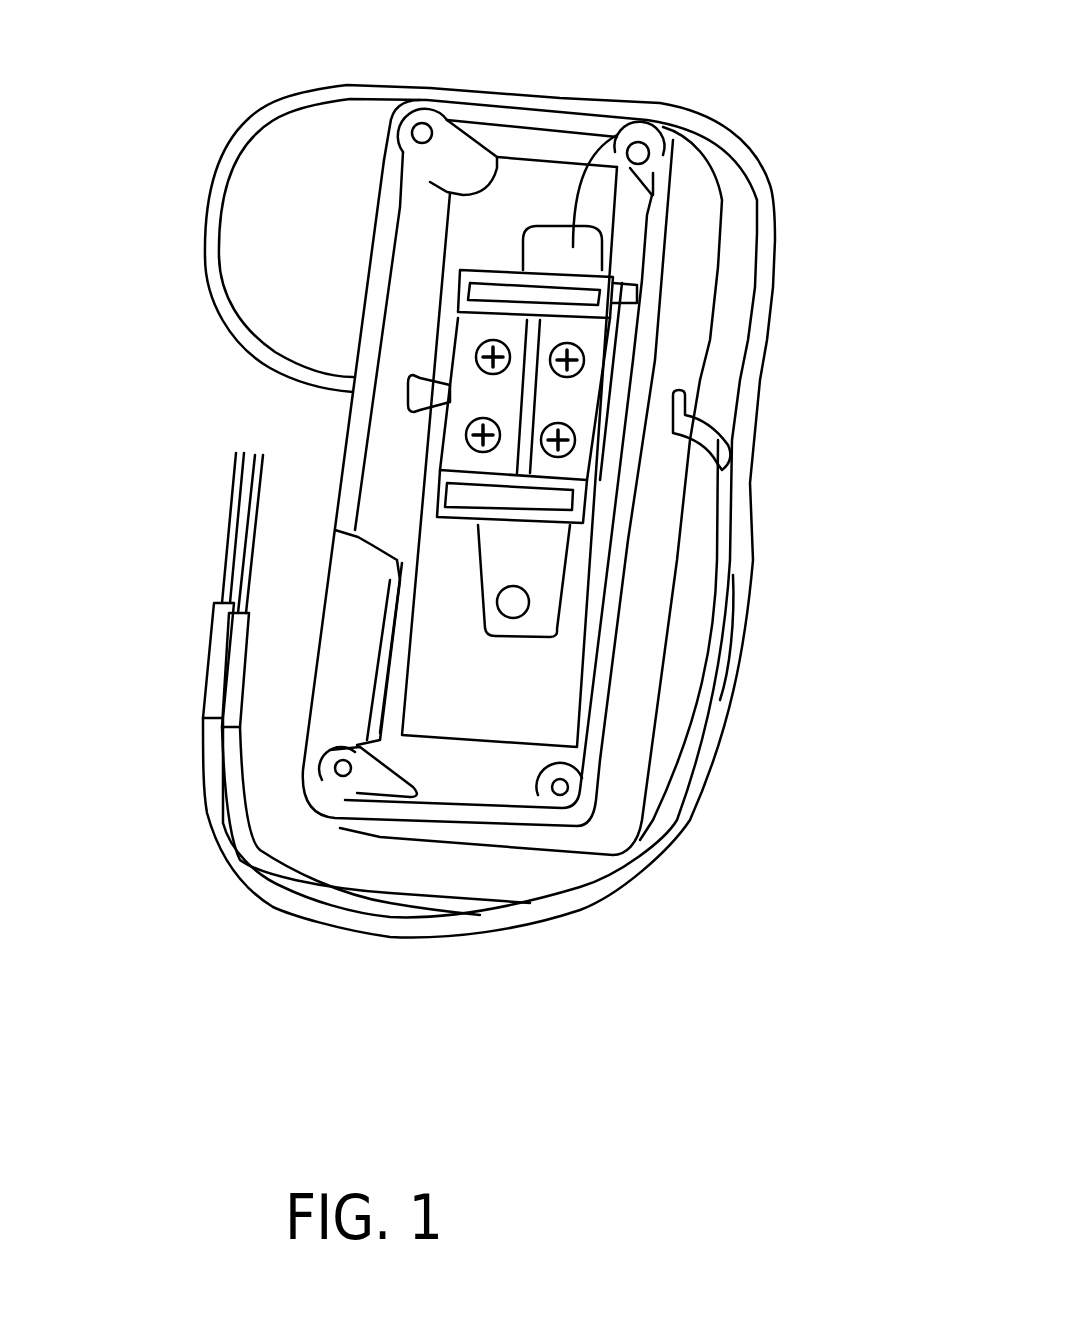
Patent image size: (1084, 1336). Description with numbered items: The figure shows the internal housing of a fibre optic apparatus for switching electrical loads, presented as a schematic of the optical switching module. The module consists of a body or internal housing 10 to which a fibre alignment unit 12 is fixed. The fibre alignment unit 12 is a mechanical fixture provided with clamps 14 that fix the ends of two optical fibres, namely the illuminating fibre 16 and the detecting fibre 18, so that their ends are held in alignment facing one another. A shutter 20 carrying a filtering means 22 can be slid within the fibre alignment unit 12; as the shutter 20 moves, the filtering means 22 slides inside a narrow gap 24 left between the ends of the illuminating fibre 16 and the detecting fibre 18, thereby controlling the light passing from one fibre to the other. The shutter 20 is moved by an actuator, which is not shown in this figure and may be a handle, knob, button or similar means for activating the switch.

The internal housing 10 is at (680, 330).
The fibre alignment unit 12 is at (493, 288).
The clamps 14 is at (490, 393).
The illuminating fibre 16 is at (210, 240).
The detecting fibre 18 is at (715, 442).
The shutter 20 is at (645, 125).
The filtering means 22 is at (552, 257).
The narrow gap 24 is at (533, 390).